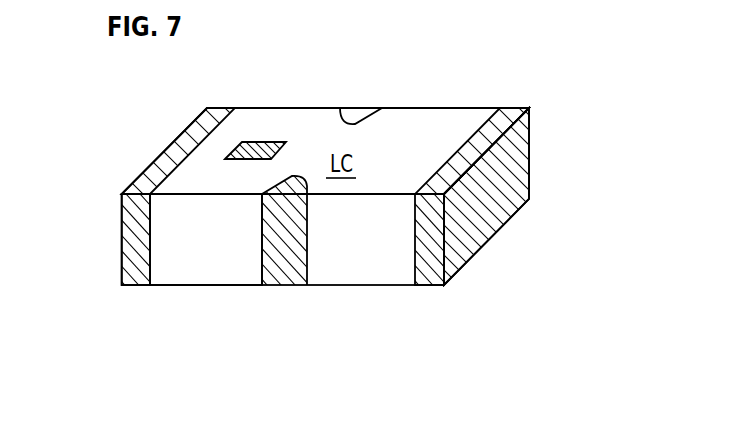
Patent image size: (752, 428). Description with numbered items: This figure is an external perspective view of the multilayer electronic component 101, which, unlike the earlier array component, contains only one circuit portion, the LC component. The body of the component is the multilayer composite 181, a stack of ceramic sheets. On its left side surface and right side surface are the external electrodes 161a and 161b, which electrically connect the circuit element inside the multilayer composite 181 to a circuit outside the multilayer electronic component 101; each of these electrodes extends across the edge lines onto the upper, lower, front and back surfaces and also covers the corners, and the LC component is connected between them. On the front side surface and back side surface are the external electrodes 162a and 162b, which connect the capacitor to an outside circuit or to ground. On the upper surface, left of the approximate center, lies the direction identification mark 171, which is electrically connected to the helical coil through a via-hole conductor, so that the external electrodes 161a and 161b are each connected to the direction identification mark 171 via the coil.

The multilayer electronic component 101 is at (153, 82).
The external electrode 161a is at (125, 241).
The external electrode 161b is at (482, 212).
The external electrode 162a is at (283, 272).
The external electrode 162b is at (363, 110).
The direction identification mark 171 is at (261, 142).
The multilayer composite 181 is at (202, 270).